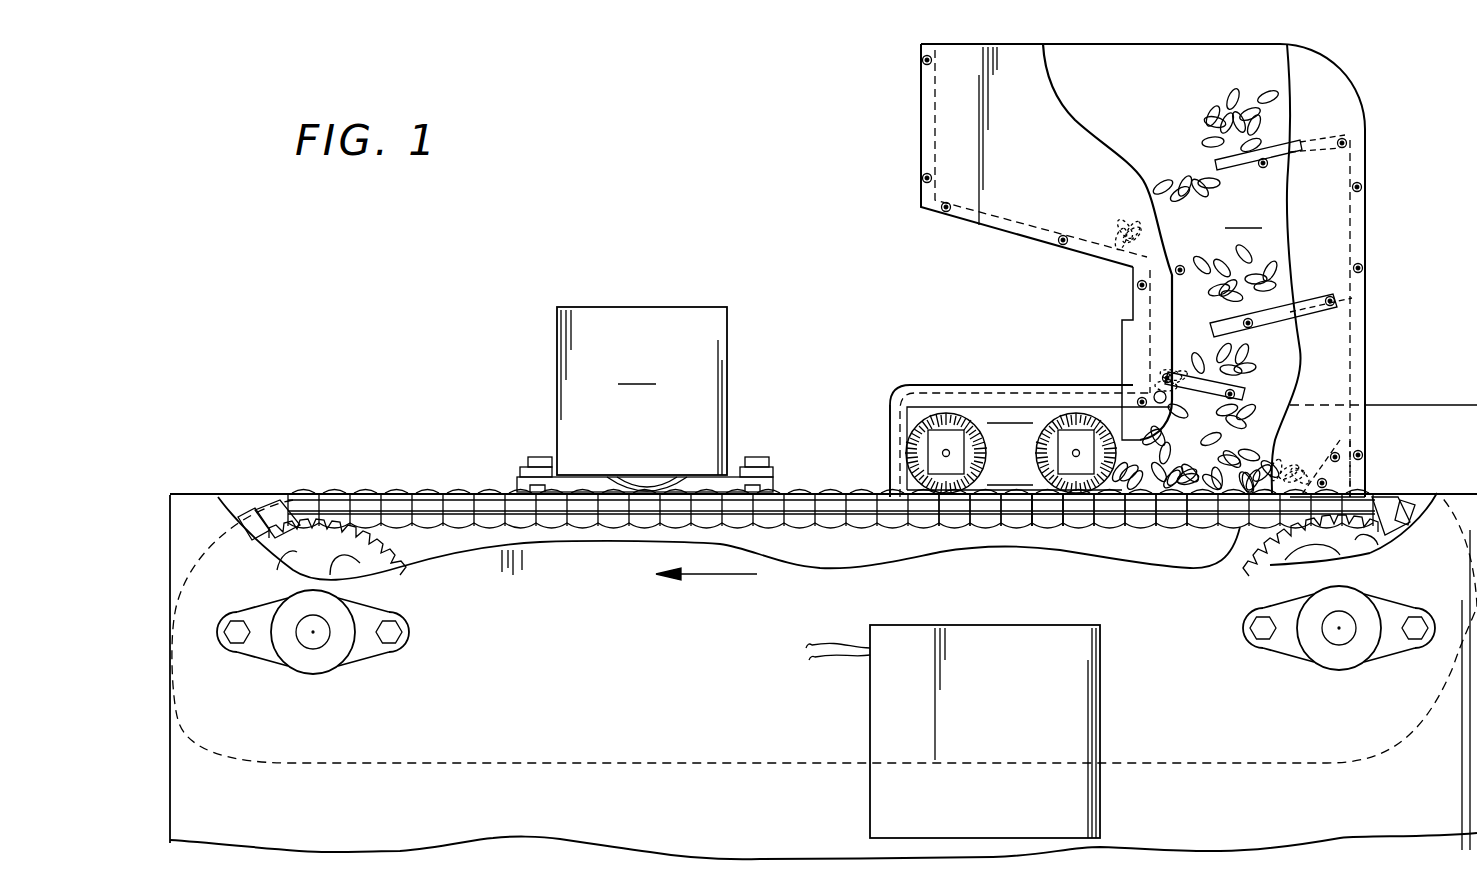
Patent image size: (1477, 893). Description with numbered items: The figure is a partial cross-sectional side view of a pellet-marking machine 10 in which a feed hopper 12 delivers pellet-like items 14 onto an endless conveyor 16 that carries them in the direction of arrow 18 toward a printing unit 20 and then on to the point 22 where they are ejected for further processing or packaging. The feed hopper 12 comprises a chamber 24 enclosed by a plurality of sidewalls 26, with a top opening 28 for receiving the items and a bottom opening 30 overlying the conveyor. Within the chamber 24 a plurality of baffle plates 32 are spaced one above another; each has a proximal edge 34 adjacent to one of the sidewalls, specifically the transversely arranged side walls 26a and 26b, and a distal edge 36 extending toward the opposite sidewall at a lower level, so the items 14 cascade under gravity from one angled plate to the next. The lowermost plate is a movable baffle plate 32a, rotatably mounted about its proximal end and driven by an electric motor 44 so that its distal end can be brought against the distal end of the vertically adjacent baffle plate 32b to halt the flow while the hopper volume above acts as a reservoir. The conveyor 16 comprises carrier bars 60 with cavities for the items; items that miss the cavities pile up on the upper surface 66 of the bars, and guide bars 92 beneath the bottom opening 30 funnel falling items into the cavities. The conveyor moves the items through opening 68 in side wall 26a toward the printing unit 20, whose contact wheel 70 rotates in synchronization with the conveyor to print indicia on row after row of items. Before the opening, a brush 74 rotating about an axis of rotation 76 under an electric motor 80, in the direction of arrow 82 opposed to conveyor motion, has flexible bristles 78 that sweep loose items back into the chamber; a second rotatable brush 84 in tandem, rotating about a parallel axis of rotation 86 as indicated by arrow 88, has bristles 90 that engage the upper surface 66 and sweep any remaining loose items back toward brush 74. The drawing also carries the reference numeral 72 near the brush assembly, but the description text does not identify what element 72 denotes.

The pellet-marking machine 10 is at (686, 233).
The feed hopper 12 is at (905, 112).
The pellet-like items 14 is at (1240, 112).
The endless conveyor 16 is at (1223, 566).
The arrow 18 is at (720, 577).
The printing unit 20 is at (642, 391).
The point 22 is at (170, 541).
The chamber 24 is at (1263, 268).
The sidewalls 26 is at (1081, 70).
The side wall 26a is at (1148, 342).
The side wall 26b is at (1367, 382).
The top opening 28 is at (1188, 45).
The bottom opening 30 is at (1160, 494).
The baffle plates 32 is at (1008, 232).
The movable baffle plate 32a is at (1215, 398).
The baffle plate 32b is at (1340, 320).
The proximal edge 34 is at (930, 218).
The distal edge 36 is at (1232, 165).
The electric motor 44 is at (1148, 393).
The carrier bars 60 is at (833, 523).
The upper surface 66 is at (1238, 505).
The opening 68 is at (1110, 494).
The contact wheel 70 is at (670, 485).
The first brush roller 72 is at (1030, 430).
The brush 74 is at (1017, 494).
The axis of rotation 76 is at (1050, 494).
The flexible bristles 78 is at (1040, 462).
The electric motor 80 is at (1068, 435).
The arrow 82 is at (1100, 472).
The second rotatable brush 84 is at (917, 455).
The axis of rotation 86 is at (910, 468).
The arrow 88 is at (950, 492).
The bristles 90 is at (905, 420).
The guide bars 92 is at (1037, 494).